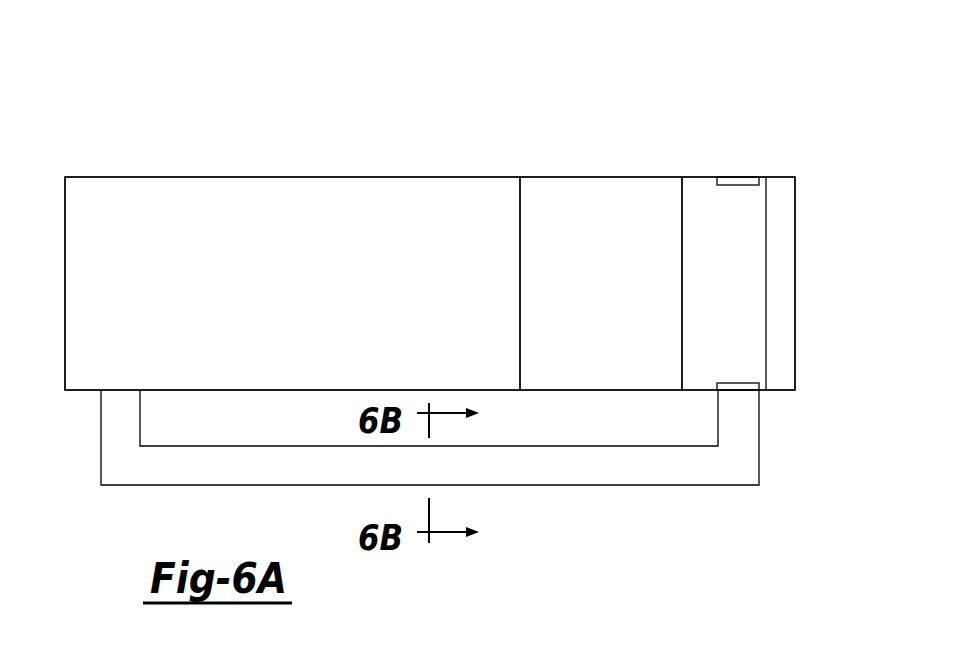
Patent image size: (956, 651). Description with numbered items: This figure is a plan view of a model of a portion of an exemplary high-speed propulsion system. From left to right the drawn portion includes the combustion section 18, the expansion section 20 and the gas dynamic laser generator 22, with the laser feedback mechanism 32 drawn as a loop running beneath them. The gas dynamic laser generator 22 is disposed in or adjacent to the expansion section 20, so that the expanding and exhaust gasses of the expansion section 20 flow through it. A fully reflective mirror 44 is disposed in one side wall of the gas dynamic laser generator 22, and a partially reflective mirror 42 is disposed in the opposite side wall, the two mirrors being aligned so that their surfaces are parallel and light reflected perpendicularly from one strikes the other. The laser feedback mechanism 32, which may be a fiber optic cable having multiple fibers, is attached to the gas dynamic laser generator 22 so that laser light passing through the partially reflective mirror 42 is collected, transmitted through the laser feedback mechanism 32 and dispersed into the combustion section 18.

The combustion section 18 is at (172, 177).
The expansion section 20 is at (604, 177).
The gas dynamic laser generator 22 is at (766, 262).
The fully reflective mirror 44 is at (738, 186).
The partially reflective mirror 42 is at (738, 383).
The laser feedback mechanism 32 is at (691, 486).